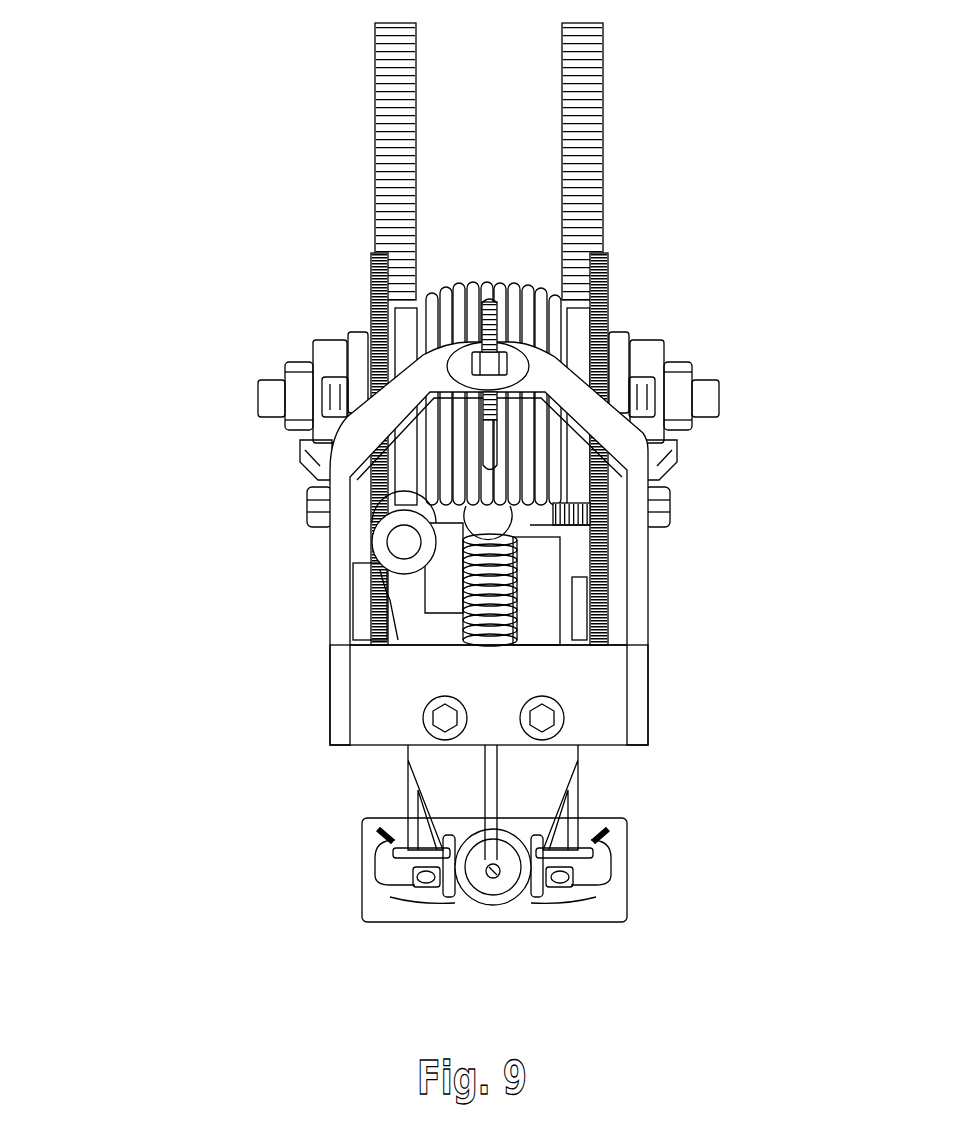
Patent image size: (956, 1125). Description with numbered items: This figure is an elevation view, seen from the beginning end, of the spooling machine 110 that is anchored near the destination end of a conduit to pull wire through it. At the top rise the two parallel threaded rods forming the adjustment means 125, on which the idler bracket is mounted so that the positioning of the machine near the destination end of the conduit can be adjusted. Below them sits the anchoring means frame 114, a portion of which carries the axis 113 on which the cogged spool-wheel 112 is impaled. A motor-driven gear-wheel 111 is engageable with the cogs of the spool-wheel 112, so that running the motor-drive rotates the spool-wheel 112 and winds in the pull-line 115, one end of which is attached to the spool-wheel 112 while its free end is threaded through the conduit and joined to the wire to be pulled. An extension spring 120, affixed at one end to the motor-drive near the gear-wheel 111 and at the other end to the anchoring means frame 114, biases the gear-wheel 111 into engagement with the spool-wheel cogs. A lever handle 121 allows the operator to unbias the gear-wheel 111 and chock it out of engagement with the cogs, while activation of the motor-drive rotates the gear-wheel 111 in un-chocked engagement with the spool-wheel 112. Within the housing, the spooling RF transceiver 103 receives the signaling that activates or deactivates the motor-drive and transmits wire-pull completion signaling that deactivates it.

The spooling machine 110 is at (160, 270).
The spooling RF transceiver 103 is at (365, 603).
The motor-driven gear-wheel 111 is at (603, 577).
The cogged spool-wheel 112 is at (604, 515).
The axis 113 is at (707, 397).
The anchoring means frame 114 is at (622, 340).
The pull-line 115 is at (495, 288).
The extension spring 120 is at (493, 548).
The lever handle 121 is at (380, 549).
The adjustment means 125 is at (603, 222).